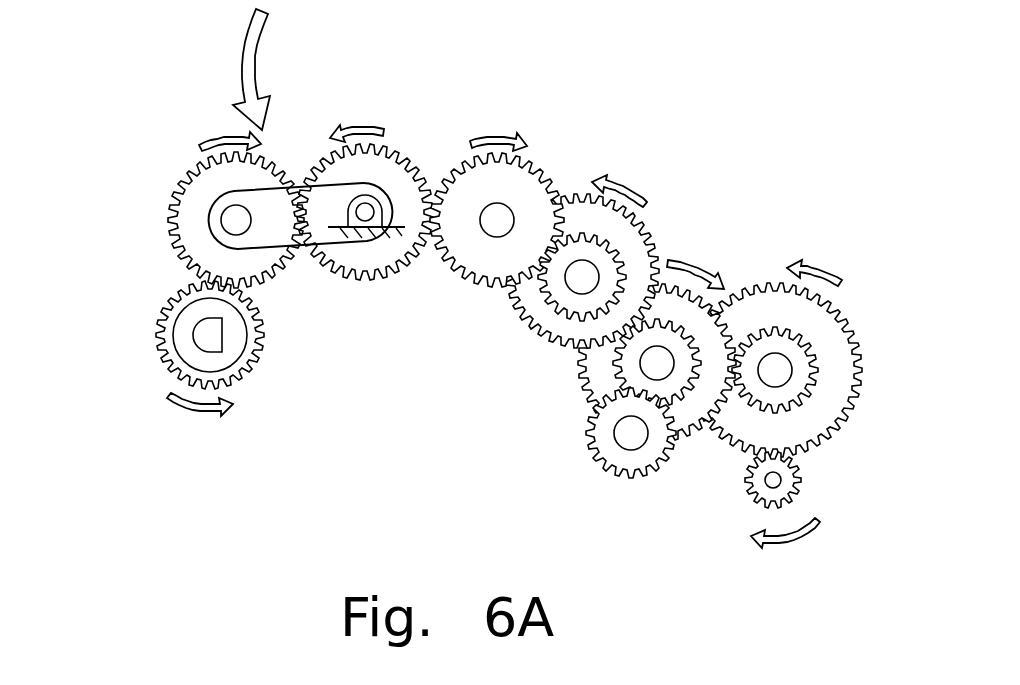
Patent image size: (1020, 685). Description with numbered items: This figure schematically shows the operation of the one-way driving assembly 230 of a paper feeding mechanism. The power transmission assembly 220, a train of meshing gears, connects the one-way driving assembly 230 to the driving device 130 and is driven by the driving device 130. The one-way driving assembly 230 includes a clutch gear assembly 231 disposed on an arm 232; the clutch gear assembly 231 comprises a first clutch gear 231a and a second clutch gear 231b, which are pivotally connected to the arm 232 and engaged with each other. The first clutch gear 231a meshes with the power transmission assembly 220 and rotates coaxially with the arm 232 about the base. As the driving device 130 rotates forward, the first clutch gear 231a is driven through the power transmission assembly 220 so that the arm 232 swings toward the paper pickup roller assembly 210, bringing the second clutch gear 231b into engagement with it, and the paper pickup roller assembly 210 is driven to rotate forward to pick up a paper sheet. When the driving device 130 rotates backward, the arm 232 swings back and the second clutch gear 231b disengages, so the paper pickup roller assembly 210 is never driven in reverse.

The driving device 130 is at (767, 486).
The paper pickup roller assembly 210 is at (158, 360).
The power transmission assembly 220 is at (700, 248).
The one-way driving assembly 230 is at (274, 227).
The clutch gear assembly 231 is at (321, 285).
The first clutch gear 231a is at (367, 265).
The second clutch gear 231b is at (247, 228).
The arm 232 is at (272, 212).